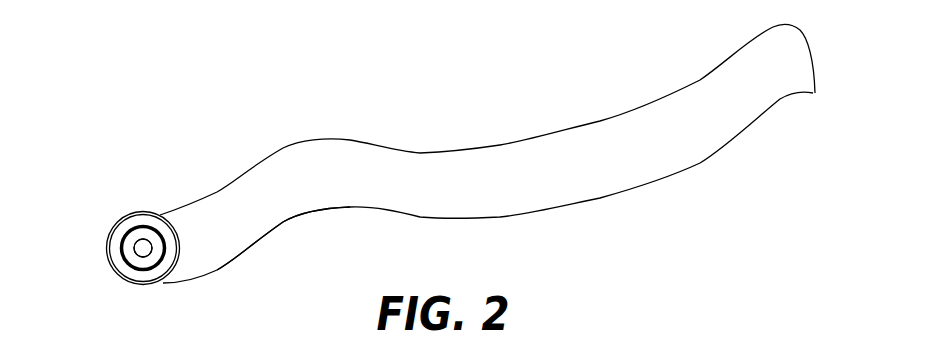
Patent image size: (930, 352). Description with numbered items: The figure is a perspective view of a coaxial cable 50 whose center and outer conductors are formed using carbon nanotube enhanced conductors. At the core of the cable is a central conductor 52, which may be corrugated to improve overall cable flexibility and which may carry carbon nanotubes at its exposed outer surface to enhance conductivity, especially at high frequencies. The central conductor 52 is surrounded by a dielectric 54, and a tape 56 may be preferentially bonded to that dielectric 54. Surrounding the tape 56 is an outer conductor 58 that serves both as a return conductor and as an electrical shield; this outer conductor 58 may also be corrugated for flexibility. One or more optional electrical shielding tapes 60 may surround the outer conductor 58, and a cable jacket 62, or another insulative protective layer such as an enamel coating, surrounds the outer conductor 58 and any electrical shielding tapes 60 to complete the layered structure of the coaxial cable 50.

The coaxial cable 50 is at (487, 153).
The central conductor 52 is at (137, 254).
The dielectric 54 is at (160, 248).
The tape 56 is at (120, 248).
The outer conductor 58 is at (155, 278).
The electrical shielding tapes 60 is at (154, 215).
The cable jacket 62 is at (287, 214).